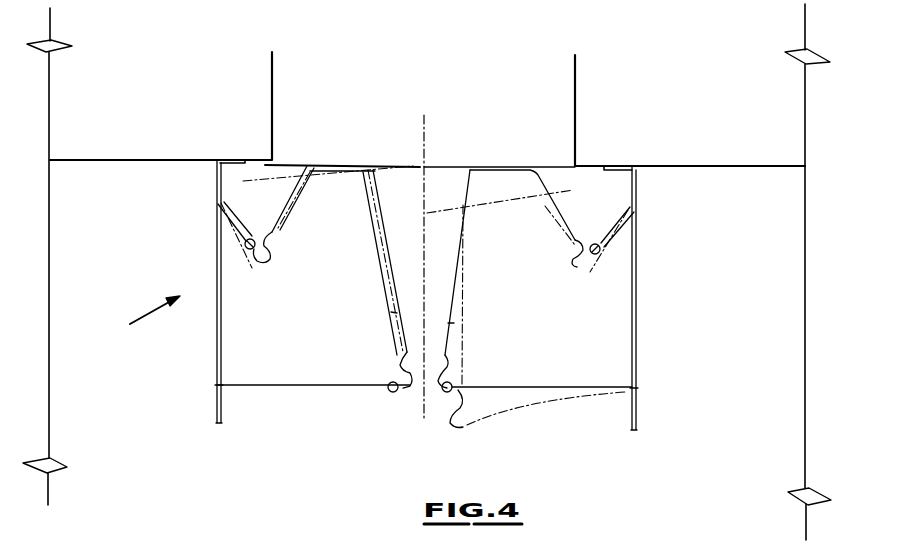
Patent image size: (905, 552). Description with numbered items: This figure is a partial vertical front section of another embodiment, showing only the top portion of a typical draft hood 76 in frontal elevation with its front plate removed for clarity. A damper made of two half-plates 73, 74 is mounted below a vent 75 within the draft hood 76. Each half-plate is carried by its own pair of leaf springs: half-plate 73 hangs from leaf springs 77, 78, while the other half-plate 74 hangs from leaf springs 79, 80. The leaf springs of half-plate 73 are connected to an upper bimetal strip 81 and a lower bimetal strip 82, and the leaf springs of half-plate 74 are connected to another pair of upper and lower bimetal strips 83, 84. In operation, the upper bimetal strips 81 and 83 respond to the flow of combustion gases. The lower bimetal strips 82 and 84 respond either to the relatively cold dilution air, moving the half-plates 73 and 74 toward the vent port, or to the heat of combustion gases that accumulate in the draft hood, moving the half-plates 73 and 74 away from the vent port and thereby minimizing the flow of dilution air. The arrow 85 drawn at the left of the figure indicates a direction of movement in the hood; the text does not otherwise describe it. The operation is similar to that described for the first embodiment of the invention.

The half-plate 73 is at (318, 165).
The half-plate 74 is at (549, 166).
The vent 75 is at (579, 100).
The draft hood 76 is at (684, 165).
The leaf spring 77 is at (290, 212).
The leaf spring 78 is at (396, 312).
The leaf spring 79 is at (549, 206).
The leaf spring 80 is at (449, 313).
The upper bimetal strip 81 is at (217, 208).
The lower bimetal strip 82 is at (316, 389).
The upper bimetal strip 83 is at (618, 232).
The lower bimetal strip 84 is at (540, 388).
The direction of movement arrow 85 is at (148, 311).